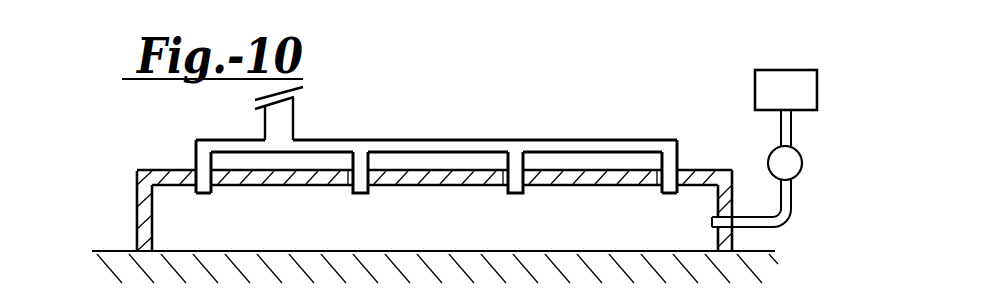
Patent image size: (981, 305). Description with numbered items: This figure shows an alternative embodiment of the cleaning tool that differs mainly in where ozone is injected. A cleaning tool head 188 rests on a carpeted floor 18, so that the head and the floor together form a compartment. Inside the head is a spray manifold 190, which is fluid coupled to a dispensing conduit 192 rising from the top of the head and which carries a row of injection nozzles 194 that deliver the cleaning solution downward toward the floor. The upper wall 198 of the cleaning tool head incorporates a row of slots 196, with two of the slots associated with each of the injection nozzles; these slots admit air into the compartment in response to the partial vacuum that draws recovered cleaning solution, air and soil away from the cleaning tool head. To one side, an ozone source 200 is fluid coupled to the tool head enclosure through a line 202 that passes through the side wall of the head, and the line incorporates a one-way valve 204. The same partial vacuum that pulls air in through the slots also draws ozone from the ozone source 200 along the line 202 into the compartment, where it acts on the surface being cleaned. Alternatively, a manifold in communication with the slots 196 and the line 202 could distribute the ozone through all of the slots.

The carpeted floor 18 is at (115, 251).
The cleaning tool head 188 is at (137, 213).
The spray manifold 190 is at (387, 140).
The dispensing conduit 192 is at (297, 112).
The injection nozzles 194 is at (518, 194).
The slots 196 is at (227, 176).
The upper wall 198 is at (570, 168).
The ozone source 200 is at (830, 42).
The line 202 is at (791, 130).
The one-way valve 204 is at (833, 148).